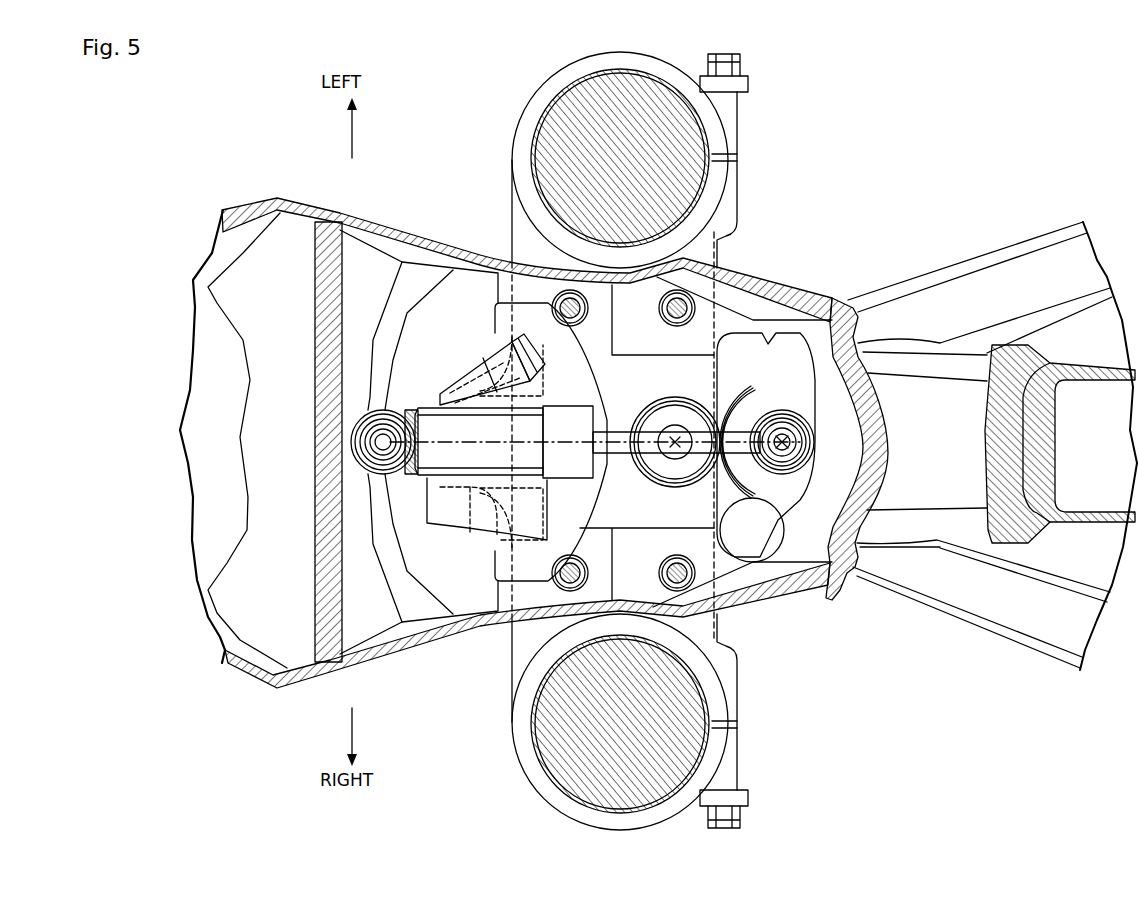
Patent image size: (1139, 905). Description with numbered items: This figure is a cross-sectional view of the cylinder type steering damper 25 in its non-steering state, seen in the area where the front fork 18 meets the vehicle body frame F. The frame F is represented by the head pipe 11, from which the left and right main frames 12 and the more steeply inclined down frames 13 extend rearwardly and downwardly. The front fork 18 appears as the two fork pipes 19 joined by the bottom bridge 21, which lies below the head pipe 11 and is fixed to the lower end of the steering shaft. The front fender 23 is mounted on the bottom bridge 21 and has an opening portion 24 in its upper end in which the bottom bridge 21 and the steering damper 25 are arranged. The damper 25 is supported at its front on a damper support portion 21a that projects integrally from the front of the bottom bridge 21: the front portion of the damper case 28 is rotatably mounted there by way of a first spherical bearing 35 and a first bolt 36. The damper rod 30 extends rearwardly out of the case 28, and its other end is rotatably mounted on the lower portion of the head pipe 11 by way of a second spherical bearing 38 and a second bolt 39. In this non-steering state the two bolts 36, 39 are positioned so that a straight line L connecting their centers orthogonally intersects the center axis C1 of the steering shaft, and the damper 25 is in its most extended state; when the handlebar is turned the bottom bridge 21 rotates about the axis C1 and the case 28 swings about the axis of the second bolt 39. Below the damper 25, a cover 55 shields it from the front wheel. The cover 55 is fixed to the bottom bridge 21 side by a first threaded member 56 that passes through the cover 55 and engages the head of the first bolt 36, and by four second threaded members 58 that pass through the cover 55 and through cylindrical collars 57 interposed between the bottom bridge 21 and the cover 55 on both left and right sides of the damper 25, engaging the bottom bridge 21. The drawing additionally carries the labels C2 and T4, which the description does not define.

The head pipe 11 is at (805, 570).
The main frames 12 is at (938, 275).
The down frames 13 is at (1083, 372).
The front fork 18 is at (737, 695).
The fork pipes 19 is at (577, 140).
The bottom bridge 21 is at (513, 226).
The damper support portion 21a is at (478, 525).
The front fender 23 is at (805, 325).
The opening portion 24 is at (763, 330).
The steering damper 25 is at (480, 535).
The damper case 28 is at (472, 422).
The damper rod 30 is at (597, 452).
The first spherical bearing 35 is at (367, 427).
The first bolt 36 is at (367, 480).
The second spherical bearing 38 is at (780, 422).
The second bolt 39 is at (783, 467).
The cover 55 is at (323, 340).
The first threaded member 56 is at (388, 412).
The cylindrical collars 57 is at (566, 290).
The second threaded members 58 is at (568, 318).
The vehicle body frame F is at (981, 260).
The straight line L is at (580, 442).
The center axis C1 is at (675, 440).
The gap T4 is at (681, 422).
The center axis 2 C2 is at (782, 440).